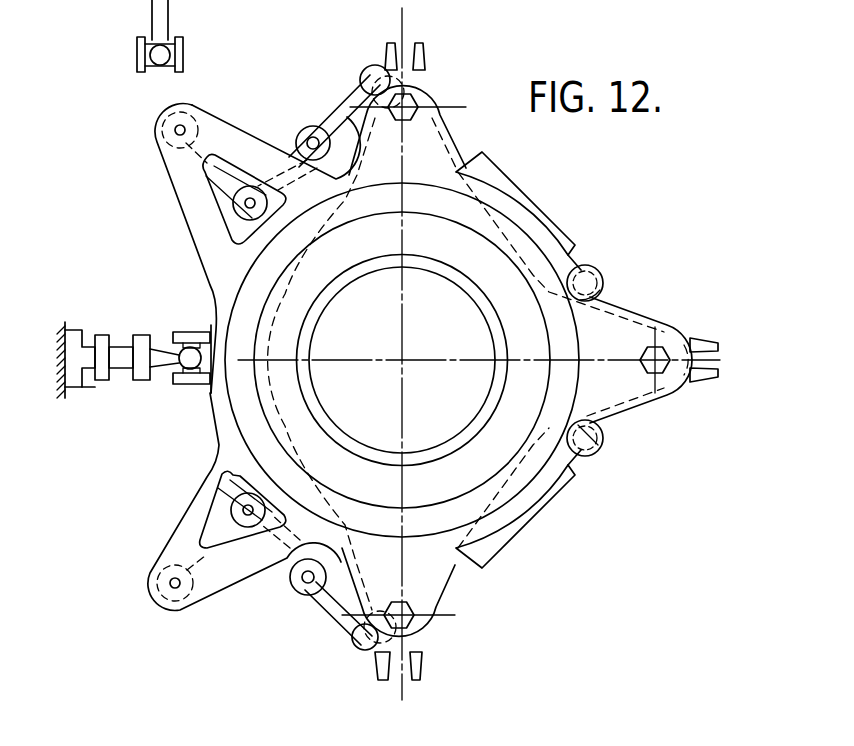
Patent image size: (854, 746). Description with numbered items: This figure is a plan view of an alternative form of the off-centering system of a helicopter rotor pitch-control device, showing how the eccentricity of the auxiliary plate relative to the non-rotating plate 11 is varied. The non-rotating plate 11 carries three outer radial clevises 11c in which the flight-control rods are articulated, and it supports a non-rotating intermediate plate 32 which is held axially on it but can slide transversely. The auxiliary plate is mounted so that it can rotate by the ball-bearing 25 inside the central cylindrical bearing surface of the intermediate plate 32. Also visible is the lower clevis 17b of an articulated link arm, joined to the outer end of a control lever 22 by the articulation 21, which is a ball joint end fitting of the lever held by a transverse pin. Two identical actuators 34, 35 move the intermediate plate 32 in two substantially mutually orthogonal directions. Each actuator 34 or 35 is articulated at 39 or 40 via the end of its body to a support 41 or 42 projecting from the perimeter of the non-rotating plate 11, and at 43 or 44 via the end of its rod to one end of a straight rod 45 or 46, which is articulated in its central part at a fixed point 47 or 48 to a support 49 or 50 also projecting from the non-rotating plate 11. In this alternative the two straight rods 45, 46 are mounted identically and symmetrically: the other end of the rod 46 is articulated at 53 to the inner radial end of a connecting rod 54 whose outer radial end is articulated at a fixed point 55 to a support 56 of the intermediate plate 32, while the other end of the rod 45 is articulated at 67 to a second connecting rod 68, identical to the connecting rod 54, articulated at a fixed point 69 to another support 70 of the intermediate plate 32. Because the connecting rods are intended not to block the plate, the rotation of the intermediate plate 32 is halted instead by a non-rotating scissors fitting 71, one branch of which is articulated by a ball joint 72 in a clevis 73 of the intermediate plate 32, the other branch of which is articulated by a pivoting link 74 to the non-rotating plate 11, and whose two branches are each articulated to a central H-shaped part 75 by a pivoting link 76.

The non-rotating plate 11 is at (65, 389).
The outer radial clevis 11c is at (438, 46).
The clevis 17b is at (137, 52).
The articulation 21 is at (183, 60).
The control lever 22 is at (168, 6).
The ball-bearing 25 is at (240, 333).
The intermediate plate 32 is at (217, 304).
The actuator 34 is at (523, 195).
The actuator 35 is at (535, 522).
The articulation 39 is at (590, 266).
The articulation 40 is at (592, 455).
The support 41 is at (602, 292).
The support 42 is at (602, 438).
The articulation 43 is at (369, 65).
The articulation 44 is at (362, 655).
The straight rod 45 is at (350, 102).
The straight rod 46 is at (346, 626).
The fixed point 47 is at (300, 140).
The fixed point 48 is at (290, 588).
The support 49 is at (310, 126).
The support 50 is at (318, 606).
The articulation 53 is at (222, 465).
The connecting rod 54 is at (205, 535).
The fixed point 55 is at (162, 583).
The support 56 is at (183, 532).
The articulation 67 is at (240, 210).
The second connecting rod 68 is at (205, 182).
The fixed point 69 is at (172, 137).
The support 70 is at (183, 167).
The non-rotating scissors fitting 71 is at (98, 398).
The ball joint 72 is at (177, 383).
The clevis 73 is at (197, 385).
The pivoting link 74 is at (78, 332).
The central H-shaped part 75 is at (122, 346).
The pivoting link 76 is at (103, 336).